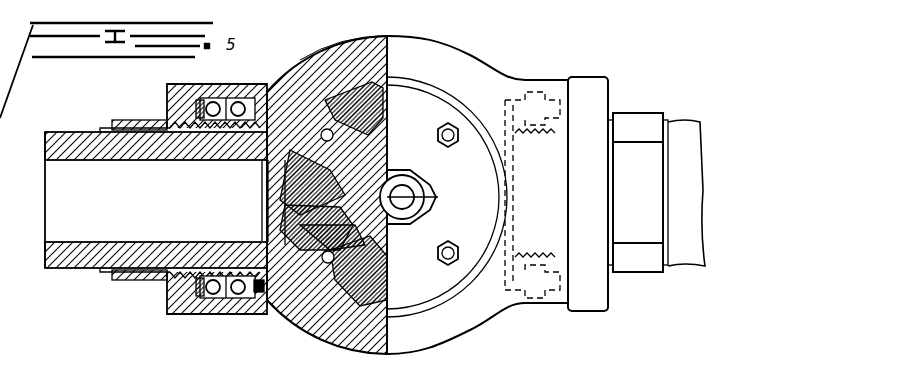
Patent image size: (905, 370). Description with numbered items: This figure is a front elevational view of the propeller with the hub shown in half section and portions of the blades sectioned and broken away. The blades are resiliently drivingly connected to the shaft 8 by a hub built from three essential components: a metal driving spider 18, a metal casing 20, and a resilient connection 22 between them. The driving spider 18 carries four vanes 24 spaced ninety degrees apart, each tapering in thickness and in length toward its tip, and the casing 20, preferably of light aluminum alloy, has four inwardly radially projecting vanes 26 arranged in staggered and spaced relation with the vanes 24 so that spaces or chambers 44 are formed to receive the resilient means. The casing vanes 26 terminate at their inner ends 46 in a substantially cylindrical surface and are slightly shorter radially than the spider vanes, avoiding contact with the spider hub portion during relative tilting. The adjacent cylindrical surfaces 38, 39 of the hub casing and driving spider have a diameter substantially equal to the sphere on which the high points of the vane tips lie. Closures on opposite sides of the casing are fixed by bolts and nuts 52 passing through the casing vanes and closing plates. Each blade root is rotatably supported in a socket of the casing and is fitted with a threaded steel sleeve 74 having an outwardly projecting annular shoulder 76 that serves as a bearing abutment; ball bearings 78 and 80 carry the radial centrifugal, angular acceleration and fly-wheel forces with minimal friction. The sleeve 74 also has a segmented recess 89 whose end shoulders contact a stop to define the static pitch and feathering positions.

The shaft 8 is at (398, 176).
The driving spider 18 is at (380, 165).
The casing 20 is at (345, 330).
The resilient connection 22 is at (270, 229).
The vanes 24 is at (386, 112).
The vanes 26 is at (375, 145).
The cylindrical surface 38 is at (282, 183).
The cylindrical surface 39 is at (285, 188).
The spaces or chambers 44 is at (356, 96).
The inner ends 46 is at (366, 243).
The bolts and nuts 52 is at (451, 265).
The steel sleeve 74 is at (257, 128).
The annular shoulder 76 is at (258, 296).
The ball bearing 78 is at (214, 296).
The ball bearing 80 is at (238, 296).
The segmented recess 89 is at (553, 80).